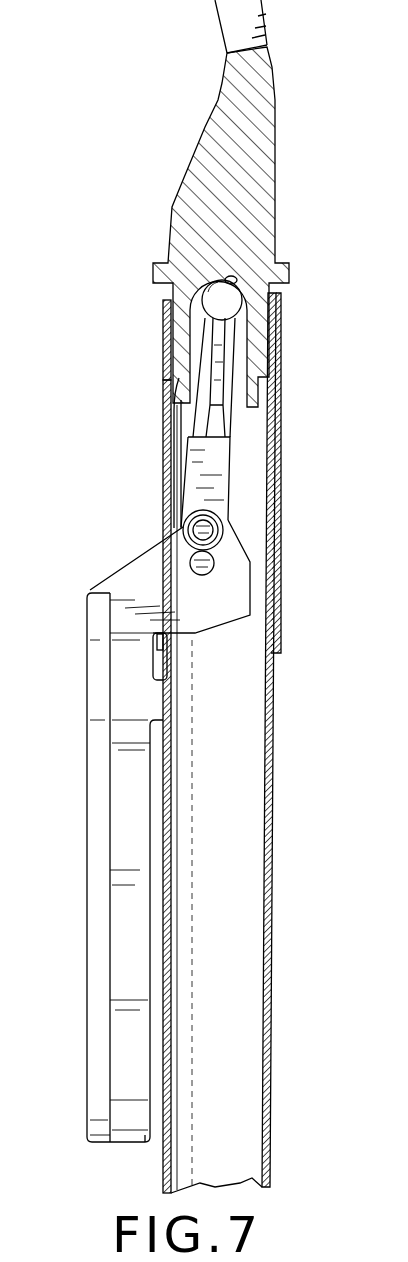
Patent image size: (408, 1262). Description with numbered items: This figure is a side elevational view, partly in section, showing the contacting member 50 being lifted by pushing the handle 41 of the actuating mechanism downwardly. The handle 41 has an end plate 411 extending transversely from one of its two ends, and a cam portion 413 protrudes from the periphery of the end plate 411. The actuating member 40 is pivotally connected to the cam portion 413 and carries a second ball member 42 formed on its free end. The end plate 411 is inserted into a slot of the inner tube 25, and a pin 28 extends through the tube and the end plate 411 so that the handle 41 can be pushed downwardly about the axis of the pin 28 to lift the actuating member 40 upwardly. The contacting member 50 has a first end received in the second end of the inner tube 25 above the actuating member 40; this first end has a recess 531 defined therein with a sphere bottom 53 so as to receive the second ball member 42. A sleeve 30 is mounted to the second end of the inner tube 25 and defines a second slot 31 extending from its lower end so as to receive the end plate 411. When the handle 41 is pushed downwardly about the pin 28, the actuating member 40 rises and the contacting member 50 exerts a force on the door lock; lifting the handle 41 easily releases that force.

The contacting member 50 is at (260, 188).
The sphere bottom 53 is at (232, 282).
The second ball member 42 is at (226, 299).
The sleeve 30 is at (280, 380).
The second slot 31 is at (162, 420).
The recess 531 is at (237, 385).
The actuating member 40 is at (193, 470).
The cam portion 413 is at (224, 545).
The pin 28 is at (213, 568).
The end plate 411 is at (200, 620).
The handle 41 is at (117, 905).
The inner tube 25 is at (271, 925).